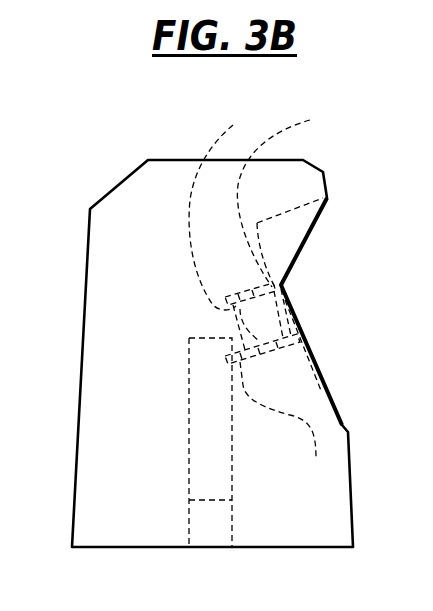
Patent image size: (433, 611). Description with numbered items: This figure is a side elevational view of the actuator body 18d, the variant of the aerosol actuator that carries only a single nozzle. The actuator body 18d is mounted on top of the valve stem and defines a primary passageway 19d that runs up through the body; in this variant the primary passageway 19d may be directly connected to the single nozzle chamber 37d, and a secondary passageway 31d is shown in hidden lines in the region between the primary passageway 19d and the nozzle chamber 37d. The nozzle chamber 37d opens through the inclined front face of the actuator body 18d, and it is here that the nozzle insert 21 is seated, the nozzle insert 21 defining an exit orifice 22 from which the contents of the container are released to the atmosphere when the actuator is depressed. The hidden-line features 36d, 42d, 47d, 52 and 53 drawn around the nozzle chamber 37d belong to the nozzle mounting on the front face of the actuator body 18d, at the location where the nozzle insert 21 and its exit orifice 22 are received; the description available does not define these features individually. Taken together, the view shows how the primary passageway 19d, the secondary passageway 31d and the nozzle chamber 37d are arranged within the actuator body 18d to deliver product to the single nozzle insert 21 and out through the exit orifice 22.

The actuator body 18d is at (130, 160).
The primary passageway 19d is at (190, 416).
The nozzle insert 21 is at (310, 325).
The exit orifice 22 is at (285, 313).
The secondary passageway 31d is at (291, 424).
The inclined surface 36d is at (267, 238).
The nozzle chamber 37d is at (295, 196).
The projection 42d is at (237, 312).
The curved wall 47d is at (226, 205).
The groove 52 is at (322, 393).
The tab 53 is at (285, 294).